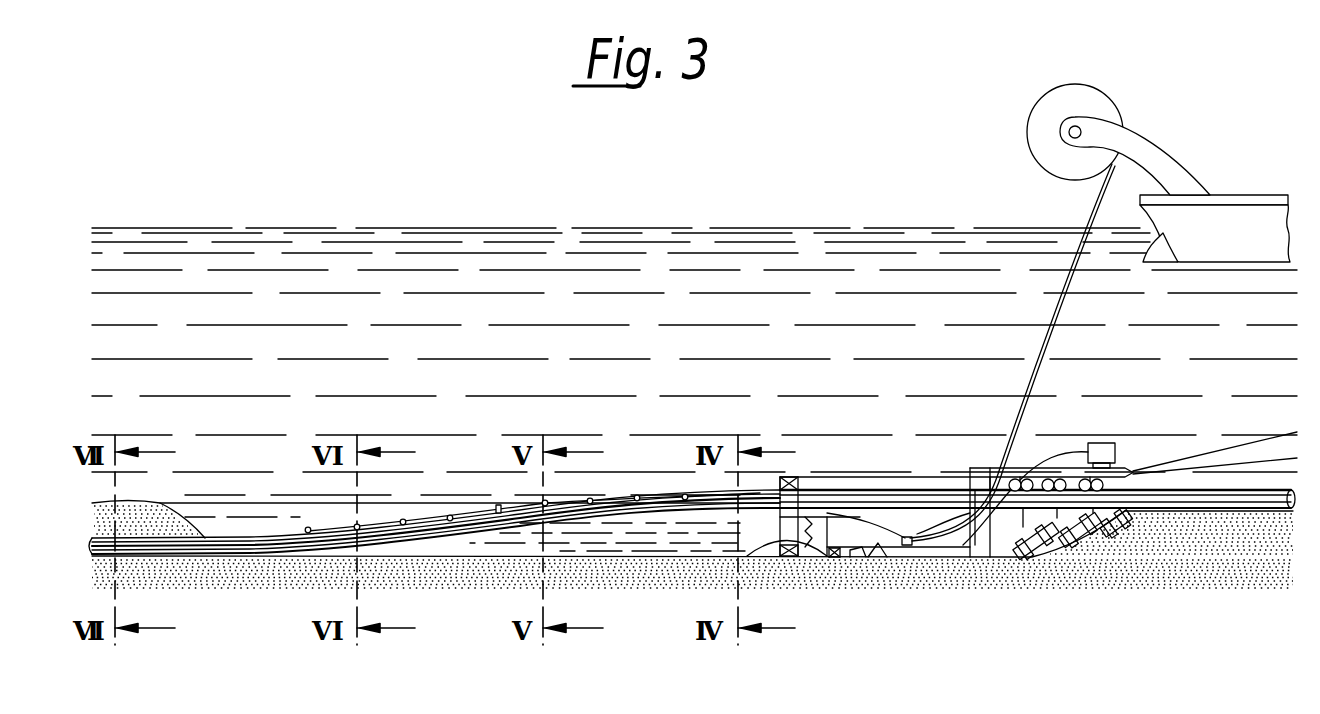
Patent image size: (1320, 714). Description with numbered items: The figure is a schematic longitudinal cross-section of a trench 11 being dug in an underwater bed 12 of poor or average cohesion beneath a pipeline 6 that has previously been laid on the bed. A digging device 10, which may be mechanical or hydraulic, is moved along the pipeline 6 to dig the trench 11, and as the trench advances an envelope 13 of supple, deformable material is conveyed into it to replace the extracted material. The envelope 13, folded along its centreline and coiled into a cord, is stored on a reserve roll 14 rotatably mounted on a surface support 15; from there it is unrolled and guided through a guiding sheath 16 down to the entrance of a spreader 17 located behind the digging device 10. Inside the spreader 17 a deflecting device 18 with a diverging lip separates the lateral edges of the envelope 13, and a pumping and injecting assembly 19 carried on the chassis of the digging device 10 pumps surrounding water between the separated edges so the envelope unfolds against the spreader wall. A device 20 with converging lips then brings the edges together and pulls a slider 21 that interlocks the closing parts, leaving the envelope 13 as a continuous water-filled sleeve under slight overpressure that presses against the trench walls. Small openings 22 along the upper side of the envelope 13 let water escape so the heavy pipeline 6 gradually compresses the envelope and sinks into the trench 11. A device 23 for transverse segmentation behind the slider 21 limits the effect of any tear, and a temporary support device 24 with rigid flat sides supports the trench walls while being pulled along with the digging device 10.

The pipeline 6 is at (1245, 500).
The digging device 10 is at (1003, 553).
The trench 11 is at (983, 520).
The underwater bed 12 is at (1133, 568).
The envelope 13 is at (475, 518).
The reserve roll 14 is at (1050, 110).
The surface support 15 is at (1232, 215).
The guiding sheath 16 is at (1067, 335).
The spreader 17 is at (912, 520).
The deflecting device 18 is at (907, 546).
The pumping and injecting assembly 19 is at (1097, 443).
The device having converging lips 20 is at (863, 555).
The slider 21 is at (833, 556).
The small openings 22 is at (450, 518).
The device for transverse segmentation 23 is at (790, 478).
The temporary support device 24 is at (863, 485).